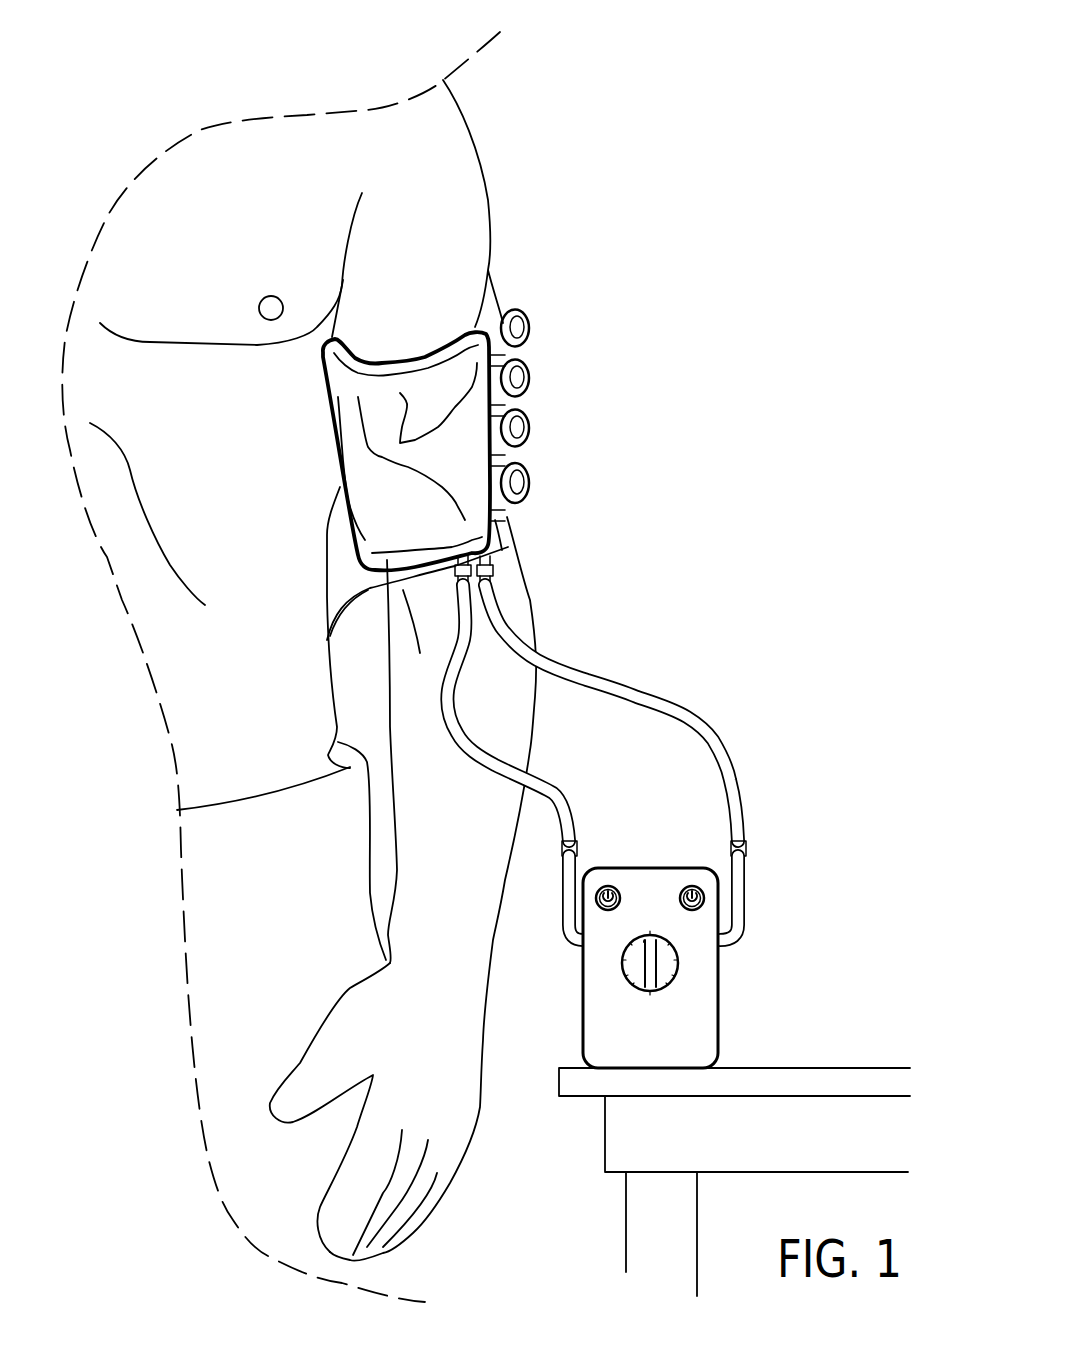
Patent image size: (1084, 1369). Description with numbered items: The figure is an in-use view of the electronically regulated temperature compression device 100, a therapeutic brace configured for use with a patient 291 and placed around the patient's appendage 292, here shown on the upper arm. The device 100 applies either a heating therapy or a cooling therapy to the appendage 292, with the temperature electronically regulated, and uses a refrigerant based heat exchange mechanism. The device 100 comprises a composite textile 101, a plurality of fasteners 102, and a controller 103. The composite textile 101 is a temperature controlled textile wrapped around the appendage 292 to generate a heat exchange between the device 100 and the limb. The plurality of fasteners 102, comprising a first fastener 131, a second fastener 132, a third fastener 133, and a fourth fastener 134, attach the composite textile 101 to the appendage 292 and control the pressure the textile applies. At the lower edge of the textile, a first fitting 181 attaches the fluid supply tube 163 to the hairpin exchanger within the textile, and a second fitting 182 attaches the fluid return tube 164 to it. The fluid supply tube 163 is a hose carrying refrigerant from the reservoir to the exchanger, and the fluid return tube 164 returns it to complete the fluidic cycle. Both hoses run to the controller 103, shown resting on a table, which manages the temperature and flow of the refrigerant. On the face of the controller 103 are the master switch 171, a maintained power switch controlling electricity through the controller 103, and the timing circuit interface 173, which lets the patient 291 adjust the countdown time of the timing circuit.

The electronically regulated temperature compression device 100 is at (560, 726).
The composite textile 101 is at (414, 345).
The plurality of fasteners 102 is at (622, 401).
The controller 103 is at (691, 968).
The first fastener 131 is at (532, 330).
The second fastener 132 is at (532, 380).
The third fastener 133 is at (532, 437).
The fourth fastener 134 is at (567, 485).
The fluid supply tube 163 is at (683, 718).
The fluid return tube 164 is at (562, 810).
The master switch 171 is at (594, 903).
The timing circuit interface 173 is at (673, 965).
The first fitting 181 is at (485, 557).
The second fitting 182 is at (328, 642).
The patient 291 is at (467, 120).
The appendage 292 is at (435, 837).